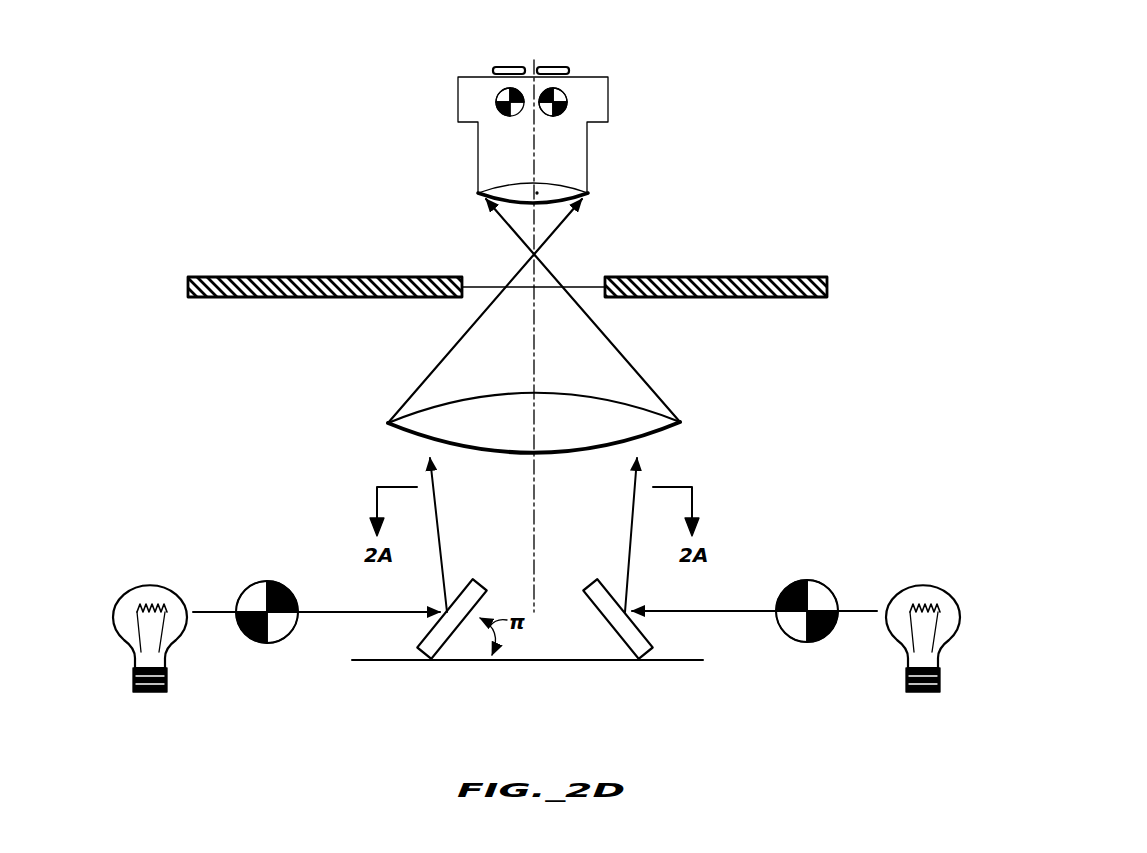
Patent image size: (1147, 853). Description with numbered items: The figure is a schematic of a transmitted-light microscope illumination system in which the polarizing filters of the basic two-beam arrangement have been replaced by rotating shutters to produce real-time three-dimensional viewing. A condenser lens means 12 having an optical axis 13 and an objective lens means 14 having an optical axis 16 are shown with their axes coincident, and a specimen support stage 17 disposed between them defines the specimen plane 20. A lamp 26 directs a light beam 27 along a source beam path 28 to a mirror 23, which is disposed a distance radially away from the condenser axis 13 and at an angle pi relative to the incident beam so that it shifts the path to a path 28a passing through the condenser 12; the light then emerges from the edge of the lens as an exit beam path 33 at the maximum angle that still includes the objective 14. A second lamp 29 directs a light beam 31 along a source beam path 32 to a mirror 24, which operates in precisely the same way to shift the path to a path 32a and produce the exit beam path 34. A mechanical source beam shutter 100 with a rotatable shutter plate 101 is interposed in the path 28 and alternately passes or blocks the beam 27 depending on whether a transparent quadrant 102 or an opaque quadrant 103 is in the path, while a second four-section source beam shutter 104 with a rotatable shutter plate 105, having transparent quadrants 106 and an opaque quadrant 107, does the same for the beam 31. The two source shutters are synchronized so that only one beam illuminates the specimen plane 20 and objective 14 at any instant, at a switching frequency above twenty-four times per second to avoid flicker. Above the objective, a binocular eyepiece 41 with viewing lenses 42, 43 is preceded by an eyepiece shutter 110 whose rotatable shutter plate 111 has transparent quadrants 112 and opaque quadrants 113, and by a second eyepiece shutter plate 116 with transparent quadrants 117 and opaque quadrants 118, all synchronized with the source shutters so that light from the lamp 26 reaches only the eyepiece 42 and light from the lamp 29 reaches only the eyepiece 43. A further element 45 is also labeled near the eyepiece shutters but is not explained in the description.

The condenser lens means 12 is at (650, 442).
The optical axis of the condenser 13 is at (540, 535).
The objective lens means 14 is at (548, 207).
The optical axis of the objective 16 is at (537, 193).
The specimen support stage 17 is at (690, 278).
The specimen plane 20 is at (577, 286).
The beam path shift means (mirror) 23 is at (475, 580).
The beam path shift means (mirror) 24 is at (593, 620).
The light beam source means (lamp) 26 is at (140, 588).
The light beam 27 is at (342, 622).
The source beam path 28 is at (377, 610).
The shifted beam path 28a is at (443, 532).
The light beam source means (lamp) 29 is at (932, 588).
The light beam 31 is at (720, 622).
The source beam path 32 is at (717, 610).
The shifted beam path 32a is at (630, 512).
The exit beam path 33 is at (433, 370).
The exit beam path 34 is at (625, 353).
The binocular eye piece 41 is at (565, 97).
The viewing lens (eyepiece) 42 is at (509, 67).
The viewing lens (eyepiece) 43 is at (553, 67).
The detector element 45 is at (565, 128).
The mechanical source beam shutter 100 is at (256, 648).
The rotatable shutter plate 101 is at (265, 581).
The transparent quadrants 102 is at (250, 600).
The opaque quadrants 103 is at (280, 586).
The second four section source beam shutter 104 is at (800, 576).
The rotatable shutter plate 105 is at (810, 646).
The transparent quadrants 106 is at (820, 590).
The opaque quadrant 107 is at (790, 592).
The eyepiece shutter 110 is at (496, 122).
The rotatable shutter plate 111 is at (497, 104).
The transparent quadrants 112 is at (500, 90).
The opaque quadrants 113 is at (531, 95).
The rotatable shutter plate 116 is at (567, 108).
The transparent quadrants 117 is at (562, 92).
The opaque quadrants 118 is at (537, 95).